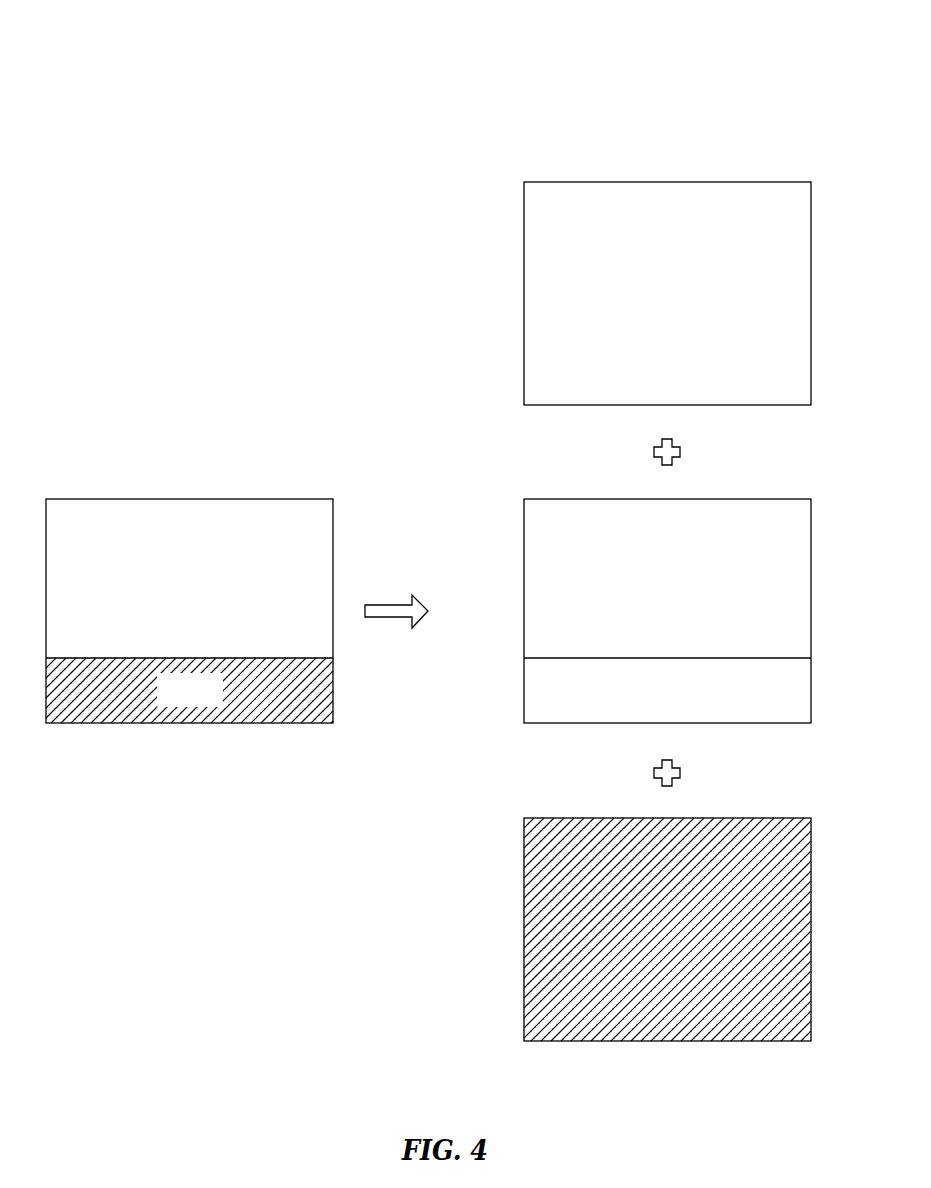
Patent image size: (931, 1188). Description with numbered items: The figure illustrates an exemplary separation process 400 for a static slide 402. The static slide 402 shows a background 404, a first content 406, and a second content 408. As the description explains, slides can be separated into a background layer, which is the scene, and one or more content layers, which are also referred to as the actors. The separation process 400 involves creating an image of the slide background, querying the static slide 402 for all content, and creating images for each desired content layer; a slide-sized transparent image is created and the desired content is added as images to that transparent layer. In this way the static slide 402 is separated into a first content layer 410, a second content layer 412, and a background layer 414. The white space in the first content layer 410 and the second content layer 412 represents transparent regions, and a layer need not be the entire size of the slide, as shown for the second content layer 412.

The separation process 400 is at (813, 46).
The static slide 402 is at (237, 498).
The background 404 is at (204, 701).
The first content 406 is at (204, 542).
The second content 408 is at (318, 589).
The first content layer 410 is at (716, 182).
The second content layer 412 is at (716, 499).
The background layer 414 is at (716, 818).